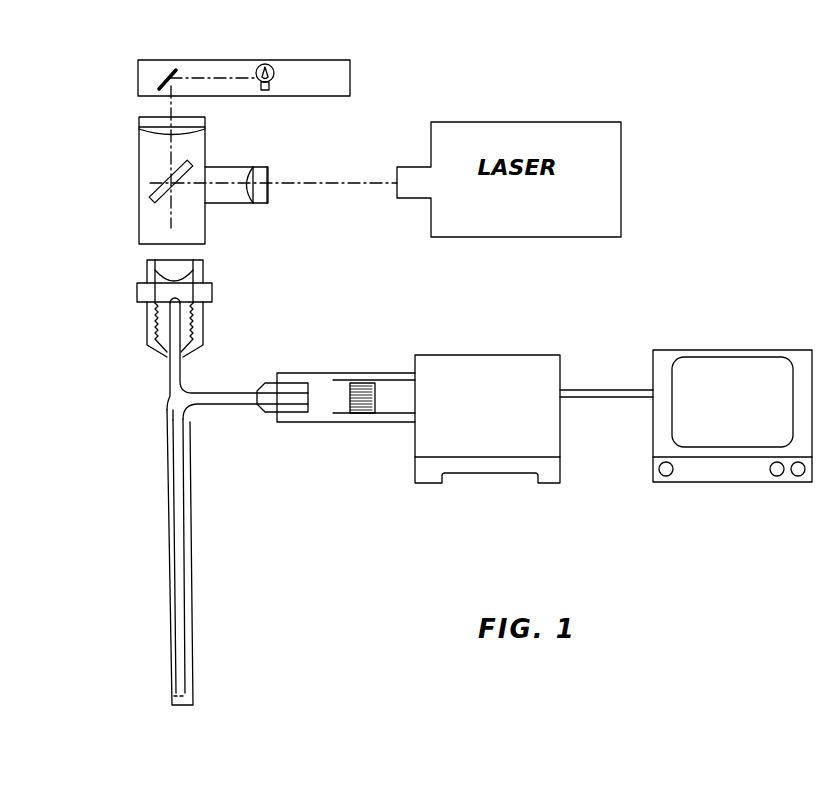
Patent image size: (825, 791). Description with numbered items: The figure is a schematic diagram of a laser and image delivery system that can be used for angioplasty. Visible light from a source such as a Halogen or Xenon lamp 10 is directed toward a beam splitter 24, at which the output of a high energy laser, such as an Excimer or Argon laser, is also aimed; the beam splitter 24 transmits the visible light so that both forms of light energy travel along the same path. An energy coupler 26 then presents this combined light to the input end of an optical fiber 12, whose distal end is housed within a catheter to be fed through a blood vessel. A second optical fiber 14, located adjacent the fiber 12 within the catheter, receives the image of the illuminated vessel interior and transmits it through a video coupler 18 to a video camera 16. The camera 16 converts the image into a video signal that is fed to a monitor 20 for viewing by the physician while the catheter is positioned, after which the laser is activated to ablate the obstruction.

The lamp 10 is at (277, 65).
The optical fiber 12 is at (166, 400).
The second optical fiber 14 is at (193, 557).
The video camera 16 is at (502, 363).
The video coupler 18 is at (327, 380).
The monitor 20 is at (723, 350).
The beam splitter 24 is at (160, 183).
The energy coupler 26 is at (129, 298).